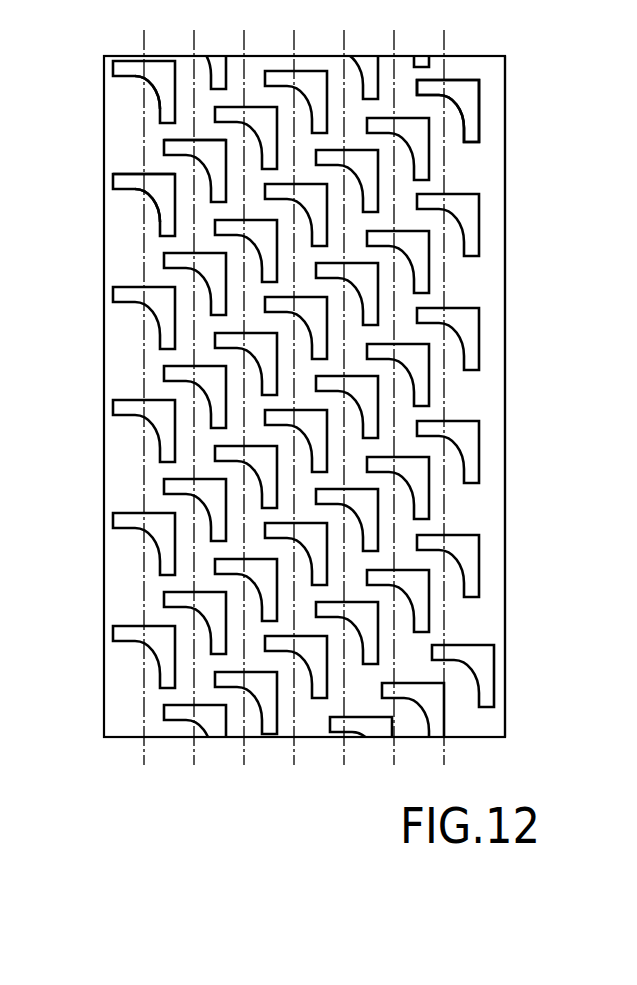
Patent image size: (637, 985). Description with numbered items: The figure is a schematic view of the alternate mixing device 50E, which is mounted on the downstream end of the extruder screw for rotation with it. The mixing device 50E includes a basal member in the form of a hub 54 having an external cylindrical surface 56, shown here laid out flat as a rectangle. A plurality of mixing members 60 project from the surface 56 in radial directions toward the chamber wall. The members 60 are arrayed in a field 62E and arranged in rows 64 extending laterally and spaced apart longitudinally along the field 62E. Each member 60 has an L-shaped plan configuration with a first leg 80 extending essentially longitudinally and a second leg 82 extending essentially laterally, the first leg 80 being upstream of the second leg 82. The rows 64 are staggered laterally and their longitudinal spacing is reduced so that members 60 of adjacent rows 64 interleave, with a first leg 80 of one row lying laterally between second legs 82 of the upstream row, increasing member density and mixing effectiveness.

The mixing device 50E is at (509, 128).
The hub 54 is at (505, 275).
The external cylindrical surface 56 is at (493, 402).
The members 60 is at (105, 87).
The field 62E is at (441, 71).
The rows 64 is at (395, 538).
The first leg 80 is at (167, 148).
The second leg 82 is at (160, 120).